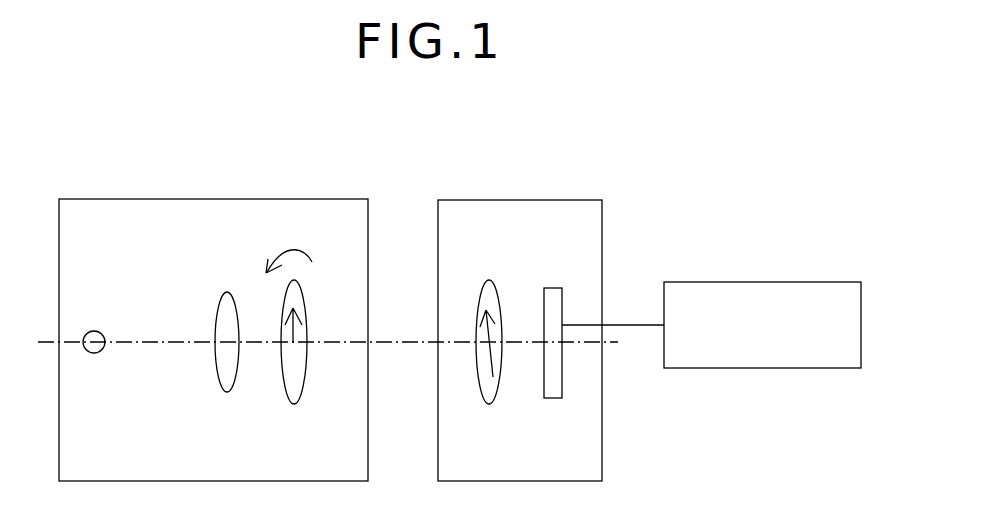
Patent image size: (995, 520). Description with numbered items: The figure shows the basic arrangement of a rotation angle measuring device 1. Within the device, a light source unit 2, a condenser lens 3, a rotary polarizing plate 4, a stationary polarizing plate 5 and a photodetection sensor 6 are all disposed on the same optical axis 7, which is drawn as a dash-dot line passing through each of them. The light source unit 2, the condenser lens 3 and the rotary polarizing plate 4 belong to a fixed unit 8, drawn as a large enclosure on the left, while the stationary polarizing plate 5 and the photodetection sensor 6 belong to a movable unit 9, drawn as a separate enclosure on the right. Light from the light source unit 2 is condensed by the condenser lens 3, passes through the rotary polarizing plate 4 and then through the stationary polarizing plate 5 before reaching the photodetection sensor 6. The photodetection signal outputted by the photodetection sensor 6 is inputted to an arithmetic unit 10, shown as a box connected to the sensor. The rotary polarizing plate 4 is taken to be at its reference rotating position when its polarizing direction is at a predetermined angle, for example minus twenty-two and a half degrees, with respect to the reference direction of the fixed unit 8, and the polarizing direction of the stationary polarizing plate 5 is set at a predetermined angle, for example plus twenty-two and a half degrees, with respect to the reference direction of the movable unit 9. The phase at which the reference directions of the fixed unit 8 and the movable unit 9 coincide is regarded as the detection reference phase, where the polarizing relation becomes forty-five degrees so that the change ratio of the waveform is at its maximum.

The rotation angle measuring device 1 is at (392, 180).
The light source unit 2 is at (94, 331).
The condenser lens 3 is at (223, 295).
The rotary polarizing plate 4 is at (300, 292).
The stationary polarizing plate 5 is at (495, 287).
The photodetection sensor 6 is at (552, 288).
The optical axis 7 is at (397, 340).
The fixed unit 8 is at (193, 200).
The movable unit 9 is at (513, 200).
The arithmetic unit 10 is at (745, 282).